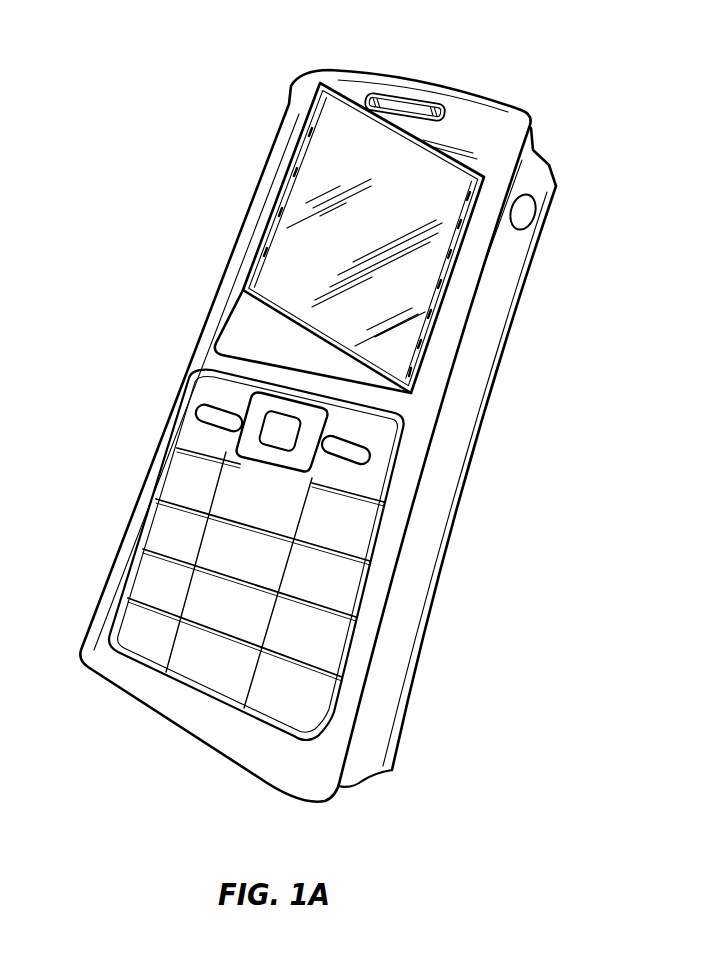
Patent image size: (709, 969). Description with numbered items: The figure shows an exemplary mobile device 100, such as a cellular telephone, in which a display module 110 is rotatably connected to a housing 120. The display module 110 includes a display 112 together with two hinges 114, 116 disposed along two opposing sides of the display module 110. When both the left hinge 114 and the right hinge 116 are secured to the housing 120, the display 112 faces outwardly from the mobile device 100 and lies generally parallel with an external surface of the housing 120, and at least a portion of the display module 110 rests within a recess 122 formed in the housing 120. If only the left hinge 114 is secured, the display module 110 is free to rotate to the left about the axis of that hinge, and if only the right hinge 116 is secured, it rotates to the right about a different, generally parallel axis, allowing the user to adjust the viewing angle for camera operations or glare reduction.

The mobile device 100 is at (150, 124).
The display module 110 is at (297, 323).
The display 112 is at (368, 242).
The left hinge 114 is at (254, 250).
The right hinge 116 is at (467, 252).
The housing 120 is at (413, 577).
The recess 122 is at (277, 363).